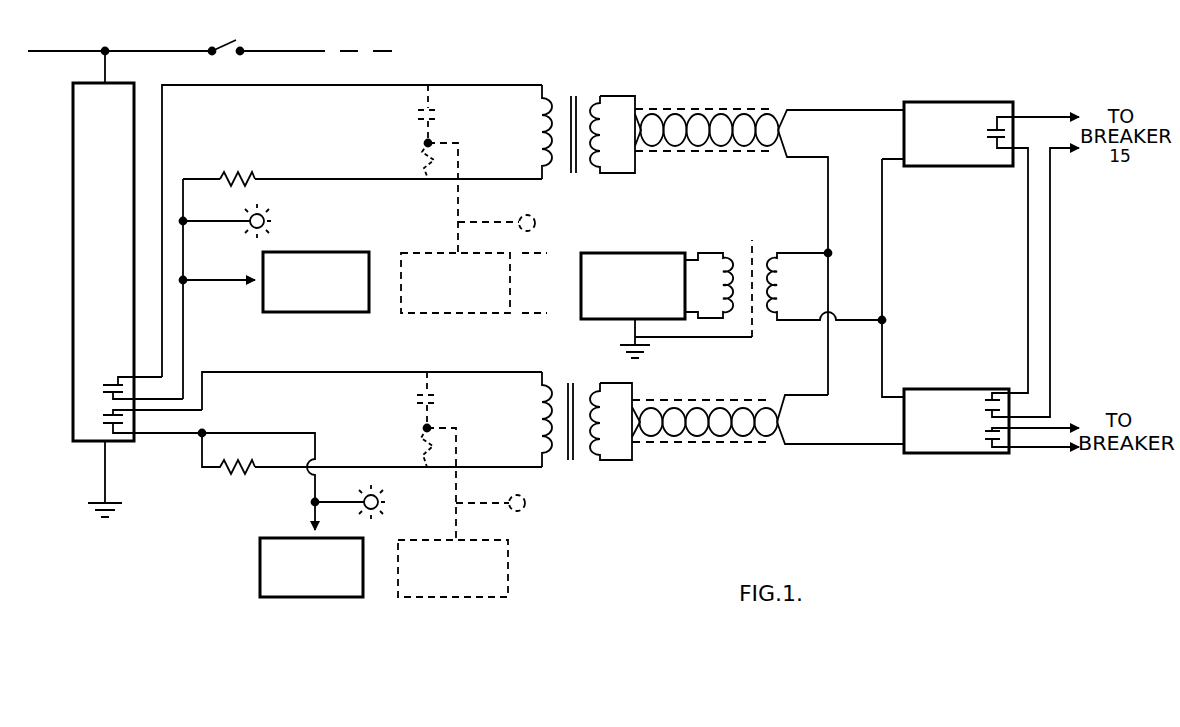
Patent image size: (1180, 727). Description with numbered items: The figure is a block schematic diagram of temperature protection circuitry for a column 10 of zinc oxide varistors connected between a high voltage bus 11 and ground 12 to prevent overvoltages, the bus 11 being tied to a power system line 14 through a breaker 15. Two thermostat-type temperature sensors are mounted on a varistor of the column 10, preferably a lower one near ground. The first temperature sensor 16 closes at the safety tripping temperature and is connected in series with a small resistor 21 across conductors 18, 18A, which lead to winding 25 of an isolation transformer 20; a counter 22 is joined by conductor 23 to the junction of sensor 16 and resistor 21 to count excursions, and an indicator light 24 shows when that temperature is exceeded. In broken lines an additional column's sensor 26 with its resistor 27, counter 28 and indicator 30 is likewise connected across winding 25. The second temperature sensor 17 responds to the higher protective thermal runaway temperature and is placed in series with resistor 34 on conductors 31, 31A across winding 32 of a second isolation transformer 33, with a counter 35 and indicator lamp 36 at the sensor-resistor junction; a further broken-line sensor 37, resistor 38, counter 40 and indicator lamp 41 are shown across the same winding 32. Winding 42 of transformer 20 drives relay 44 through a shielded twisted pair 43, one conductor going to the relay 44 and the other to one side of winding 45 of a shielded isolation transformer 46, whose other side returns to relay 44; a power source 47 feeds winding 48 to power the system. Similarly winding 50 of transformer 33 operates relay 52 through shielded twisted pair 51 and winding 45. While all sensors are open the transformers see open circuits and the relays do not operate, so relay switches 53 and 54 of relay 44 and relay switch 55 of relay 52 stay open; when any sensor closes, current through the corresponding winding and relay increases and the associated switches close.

The column of zinc oxide varistors 10 is at (74, 198).
The high voltage bus 11 is at (162, 50).
The ground 12 is at (101, 468).
The line 14 is at (306, 50).
The breaker 15 is at (226, 46).
The first temperature sensor 16 is at (109, 418).
The second temperature sensor 17 is at (114, 382).
The conductor 18 is at (312, 370).
The conductor 18A is at (512, 466).
The isolation transformer 20 is at (585, 370).
The resistor 21 is at (229, 472).
The counter 22 is at (258, 566).
The conductor 23 is at (250, 433).
The indicator light 24 is at (381, 500).
The winding 25 is at (541, 414).
The temperature sensor 26 is at (441, 398).
The resistor 27 is at (421, 452).
The counter 28 is at (442, 536).
The indicator 30 is at (524, 516).
The conductor 31 is at (169, 109).
The conductor 31A is at (307, 178).
The winding 32 is at (541, 129).
The isolation transformer 33 is at (566, 195).
The resistor 34 is at (244, 170).
The counter 35 is at (328, 258).
The indicator lamp 36 is at (267, 218).
The sensor 37 is at (438, 125).
The resistor 38 is at (421, 160).
The counter 40 is at (452, 317).
The indicator lamp 41 is at (532, 217).
The winding 42 is at (604, 421).
The shielded twisted pair 43 is at (720, 440).
The relay 44 is at (927, 454).
The winding 45 is at (780, 290).
The shielded isolation transformer 46 is at (733, 365).
The power source 47 is at (635, 252).
The winding 48 is at (726, 281).
The winding 50 is at (600, 140).
The shielded twisted pair 51 is at (712, 109).
The relay 52 is at (962, 102).
The relay switch 53 is at (987, 395).
The relay switch 54 is at (986, 454).
The relay switch 55 is at (990, 150).